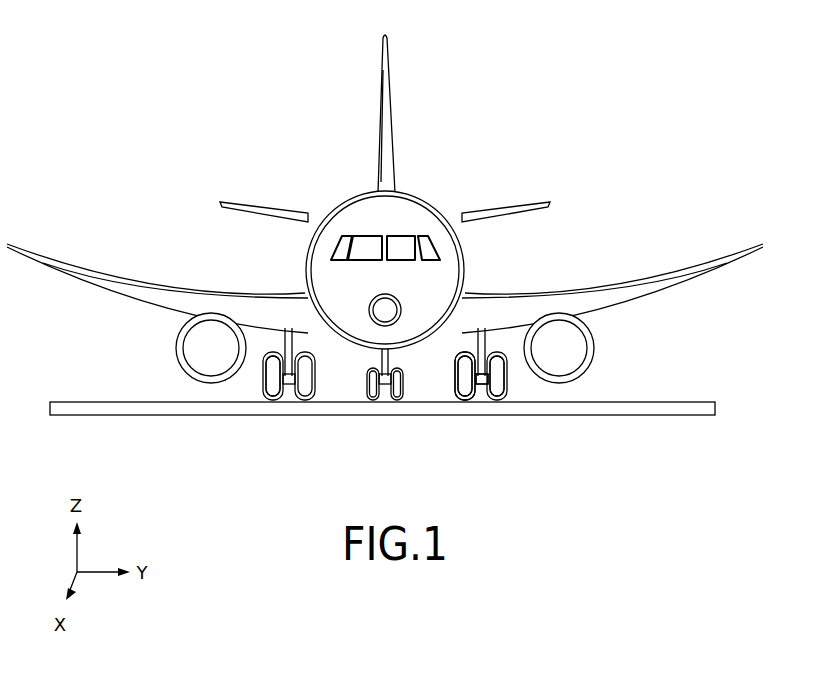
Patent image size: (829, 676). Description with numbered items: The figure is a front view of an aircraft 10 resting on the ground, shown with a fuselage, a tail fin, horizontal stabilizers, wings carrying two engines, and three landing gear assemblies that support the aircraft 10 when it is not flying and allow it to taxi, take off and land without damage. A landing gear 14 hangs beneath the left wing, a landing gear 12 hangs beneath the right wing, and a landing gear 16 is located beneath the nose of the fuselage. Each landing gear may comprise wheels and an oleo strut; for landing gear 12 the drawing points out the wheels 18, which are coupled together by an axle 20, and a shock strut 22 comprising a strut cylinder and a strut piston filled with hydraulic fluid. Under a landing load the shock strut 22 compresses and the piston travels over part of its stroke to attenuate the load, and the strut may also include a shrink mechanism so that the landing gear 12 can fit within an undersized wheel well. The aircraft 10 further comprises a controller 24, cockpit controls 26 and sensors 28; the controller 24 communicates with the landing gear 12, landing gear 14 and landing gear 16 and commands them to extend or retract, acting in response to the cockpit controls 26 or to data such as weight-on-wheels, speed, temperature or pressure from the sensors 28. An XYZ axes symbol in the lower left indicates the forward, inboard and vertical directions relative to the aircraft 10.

The aircraft 10 is at (280, 114).
The landing gear 12 is at (507, 326).
The landing gear 14 is at (272, 337).
The landing gear 16 is at (353, 391).
The wheels 18 is at (463, 385).
The axle 20 is at (481, 384).
The shock strut 22 is at (470, 348).
The controller 24 is at (355, 322).
The cockpit controls 26 is at (340, 240).
The sensors 28 is at (280, 377).